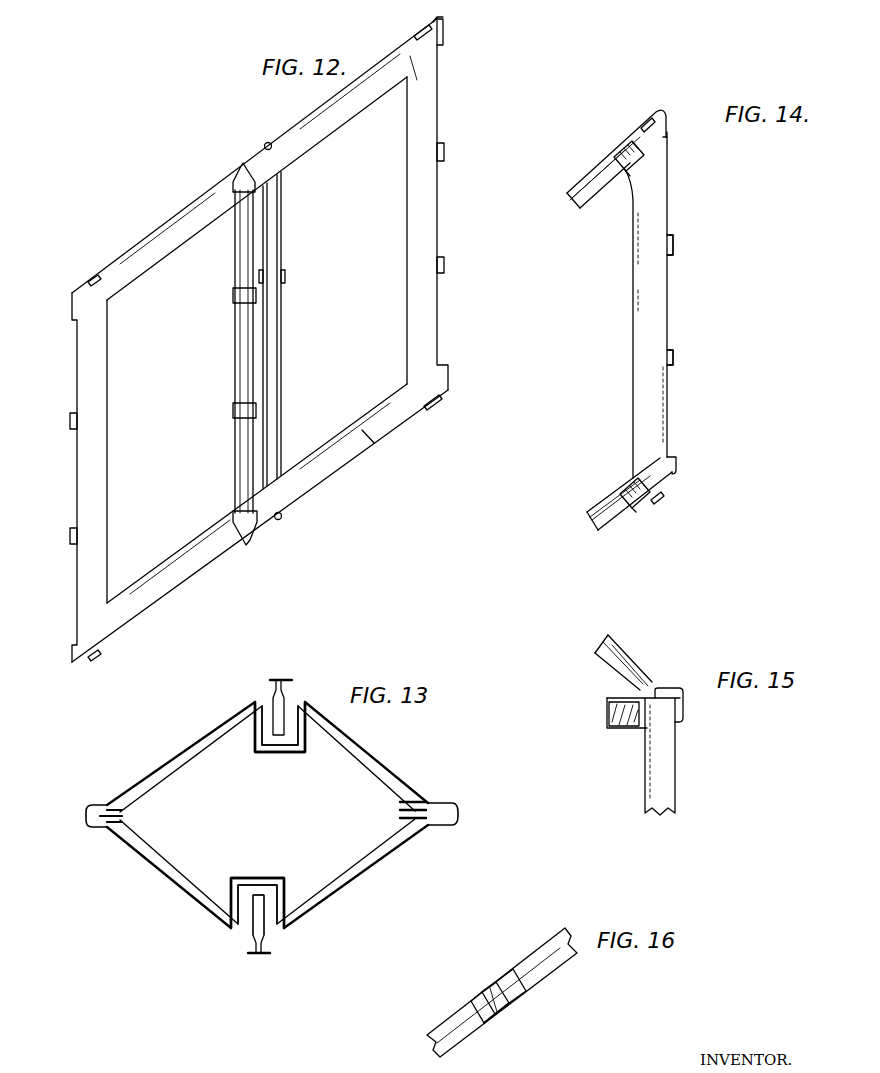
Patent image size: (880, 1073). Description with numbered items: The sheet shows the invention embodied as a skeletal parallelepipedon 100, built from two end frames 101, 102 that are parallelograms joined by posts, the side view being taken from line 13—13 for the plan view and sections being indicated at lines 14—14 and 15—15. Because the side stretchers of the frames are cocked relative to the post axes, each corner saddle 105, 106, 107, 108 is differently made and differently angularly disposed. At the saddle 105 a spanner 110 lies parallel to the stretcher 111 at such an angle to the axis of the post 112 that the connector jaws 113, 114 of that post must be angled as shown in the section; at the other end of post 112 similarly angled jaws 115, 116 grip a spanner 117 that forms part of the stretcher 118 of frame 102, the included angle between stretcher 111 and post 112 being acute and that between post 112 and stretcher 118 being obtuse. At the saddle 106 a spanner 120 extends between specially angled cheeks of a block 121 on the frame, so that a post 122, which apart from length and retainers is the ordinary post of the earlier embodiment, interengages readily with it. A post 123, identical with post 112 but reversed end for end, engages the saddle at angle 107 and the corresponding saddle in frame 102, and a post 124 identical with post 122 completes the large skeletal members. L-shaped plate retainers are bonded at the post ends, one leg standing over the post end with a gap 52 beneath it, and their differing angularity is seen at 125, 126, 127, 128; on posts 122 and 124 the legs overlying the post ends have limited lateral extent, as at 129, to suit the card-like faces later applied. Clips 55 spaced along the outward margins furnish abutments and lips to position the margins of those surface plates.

In FIG. 12, the section line 13— 13 is at (118, 22).
In FIG. 13, the section line 14— 14 is at (395, 813).
In FIG. 12, the section line 15— 15 is at (243, 160).
In FIG. 15, the gap 52 is at (664, 692).
In FIG. 14, the clips 55 is at (674, 246).
In FIG. 12, the parallelepipedon 100 is at (424, 122).
In FIG. 13, the parallelepipedon 100 is at (267, 815).
In FIG. 12, the end frame 101 is at (195, 224).
In FIG. 13, the end frame 101 is at (186, 878).
In FIG. 14, the end frame 101 is at (586, 209).
In FIG. 15, the end frame 101 is at (610, 661).
In FIG. 16, the end frame 101 is at (533, 997).
In FIG. 12, the end frame 102 is at (336, 474).
In FIG. 14, the end frame 102 is at (617, 528).
In FIG. 12, the saddle 105 is at (412, 53).
In FIG. 13, the saddle 105 is at (433, 799).
In FIG. 14, the saddle 105 is at (631, 133).
In FIG. 13, the saddle 106 is at (276, 891).
In FIG. 16, the saddle 106 is at (503, 972).
In FIG. 13, the saddle 107 is at (118, 802).
In FIG. 13, the saddle 108 is at (301, 700).
In FIG. 14, the spanner 110 is at (626, 146).
In FIG. 14, the stretcher 111 is at (581, 188).
In FIG. 14, the post 112 is at (656, 188).
In FIG. 14, the jaw 113 is at (619, 158).
In FIG. 14, the jaw 114 is at (621, 181).
In FIG. 14, the jaw 115 is at (626, 487).
In FIG. 14, the jaw 116 is at (633, 501).
In FIG. 14, the spanner 117 is at (622, 493).
In FIG. 12, the stretcher 118 is at (360, 436).
In FIG. 14, the stretcher 118 is at (598, 510).
In FIG. 15, the spanner 120 is at (607, 712).
In FIG. 16, the spanner 120 is at (497, 990).
In FIG. 13, the block 121 is at (245, 884).
In FIG. 16, the block 121 is at (477, 1000).
In FIG. 12, the post 122 is at (245, 343).
In FIG. 13, the post 122 is at (252, 922).
In FIG. 15, the post 122 is at (658, 800).
In FIG. 12, the post 123 is at (93, 476).
In FIG. 13, the post 123 is at (102, 829).
In FIG. 12, the post 124 is at (278, 314).
In FIG. 13, the post 124 is at (270, 703).
In FIG. 12, the retainer 125 is at (440, 31).
In FIG. 14, the retainer 125 is at (670, 123).
In FIG. 12, the retainer 126 is at (442, 398).
In FIG. 14, the retainer 126 is at (678, 468).
In FIG. 12, the retainer 127 is at (78, 664).
In FIG. 12, the retainer 128 is at (70, 300).
In FIG. 12, the retainer leg of limited lateral extent 129 is at (270, 142).
In FIG. 13, the retainer leg of limited lateral extent 129 is at (286, 684).